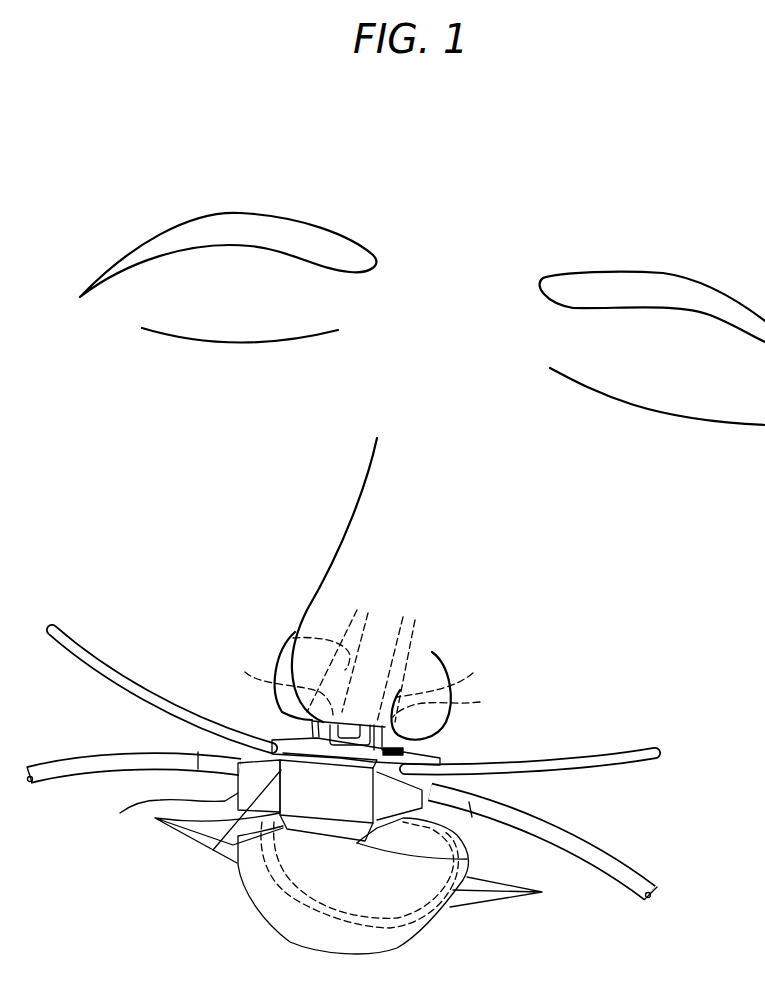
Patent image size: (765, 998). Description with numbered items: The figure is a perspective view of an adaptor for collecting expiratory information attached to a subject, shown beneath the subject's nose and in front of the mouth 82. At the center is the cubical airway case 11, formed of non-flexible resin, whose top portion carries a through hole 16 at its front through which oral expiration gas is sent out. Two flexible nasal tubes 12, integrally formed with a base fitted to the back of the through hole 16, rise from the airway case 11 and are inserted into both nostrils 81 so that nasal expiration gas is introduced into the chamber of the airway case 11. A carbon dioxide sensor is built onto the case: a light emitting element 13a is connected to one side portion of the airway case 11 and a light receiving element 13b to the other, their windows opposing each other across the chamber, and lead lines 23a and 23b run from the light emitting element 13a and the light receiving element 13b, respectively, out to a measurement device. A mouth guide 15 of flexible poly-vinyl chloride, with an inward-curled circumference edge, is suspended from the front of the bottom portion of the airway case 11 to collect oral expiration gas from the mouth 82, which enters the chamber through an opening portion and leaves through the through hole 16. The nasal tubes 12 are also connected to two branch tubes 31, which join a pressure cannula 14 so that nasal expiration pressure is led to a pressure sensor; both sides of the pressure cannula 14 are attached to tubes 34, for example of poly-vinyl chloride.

The airway case 11 is at (323, 803).
The nasal tubes 12 is at (358, 679).
The light emitting element 13a is at (403, 800).
The light receiving element 13b is at (120, 813).
The pressure cannula 14 is at (413, 757).
The mouth guide 15 is at (405, 897).
The through hole 16 is at (213, 850).
The lead line 23a is at (617, 863).
The lead line 23b is at (63, 763).
The branch tubes 31 is at (317, 728).
The tubes 34 is at (107, 674).
The nostrils 81 is at (293, 637).
The mouth 82 is at (492, 900).